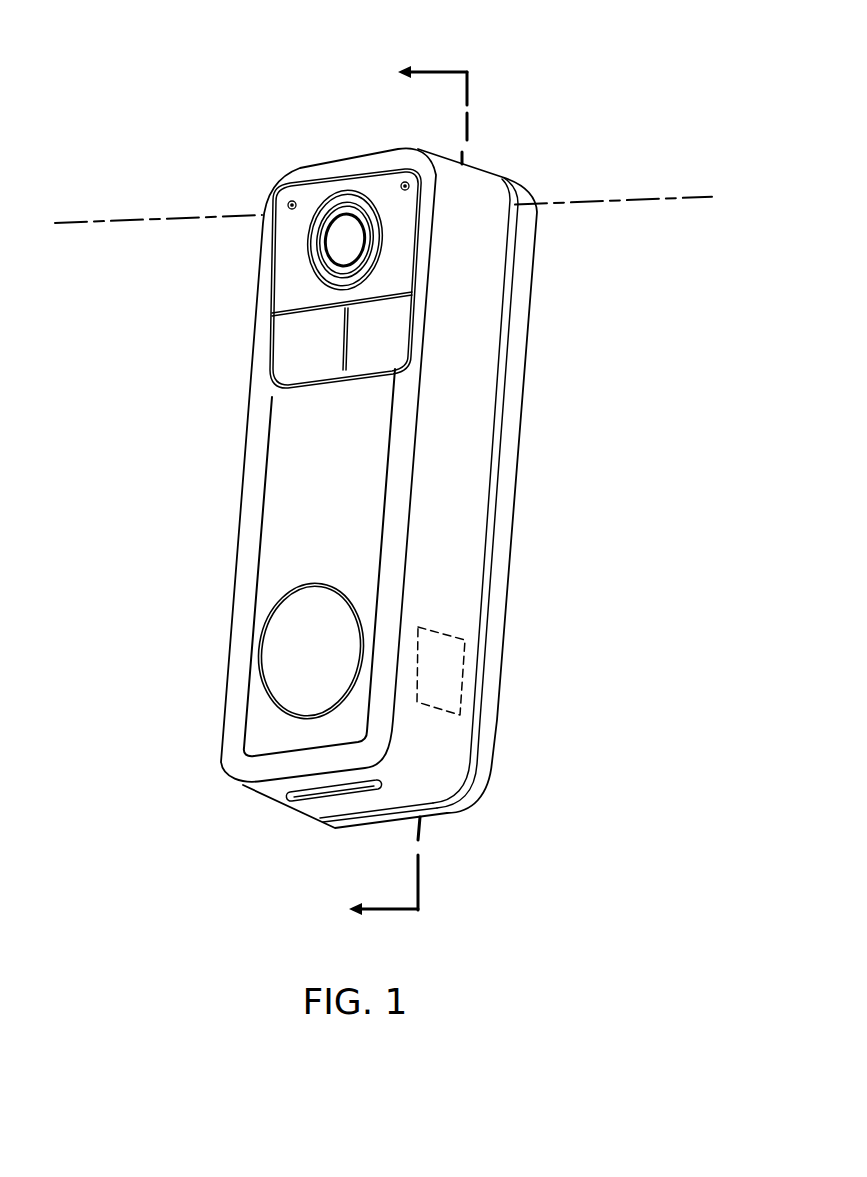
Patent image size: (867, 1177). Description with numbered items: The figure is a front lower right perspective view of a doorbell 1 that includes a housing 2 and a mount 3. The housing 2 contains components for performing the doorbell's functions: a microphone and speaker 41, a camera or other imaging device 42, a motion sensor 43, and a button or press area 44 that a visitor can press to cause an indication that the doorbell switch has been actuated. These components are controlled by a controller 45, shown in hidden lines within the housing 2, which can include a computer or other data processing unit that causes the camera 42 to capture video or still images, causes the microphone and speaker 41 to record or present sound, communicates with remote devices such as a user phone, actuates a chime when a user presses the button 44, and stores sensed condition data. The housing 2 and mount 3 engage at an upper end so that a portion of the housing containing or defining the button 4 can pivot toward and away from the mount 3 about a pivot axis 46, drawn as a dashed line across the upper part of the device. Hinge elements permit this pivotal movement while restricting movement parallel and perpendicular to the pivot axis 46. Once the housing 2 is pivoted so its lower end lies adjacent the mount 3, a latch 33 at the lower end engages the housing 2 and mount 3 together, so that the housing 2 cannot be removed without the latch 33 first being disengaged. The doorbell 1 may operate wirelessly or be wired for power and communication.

The doorbell 1 is at (139, 68).
The housing 2 is at (263, 288).
The mount 3 is at (520, 300).
The button 4 is at (396, 494).
The latch 33 is at (430, 811).
The microphone and speaker 41 is at (286, 799).
The camera 42 is at (328, 250).
The motion sensor 43 is at (297, 357).
The button or press area 44 is at (295, 664).
The controller 45 is at (443, 673).
The pivot axis 46 is at (603, 197).